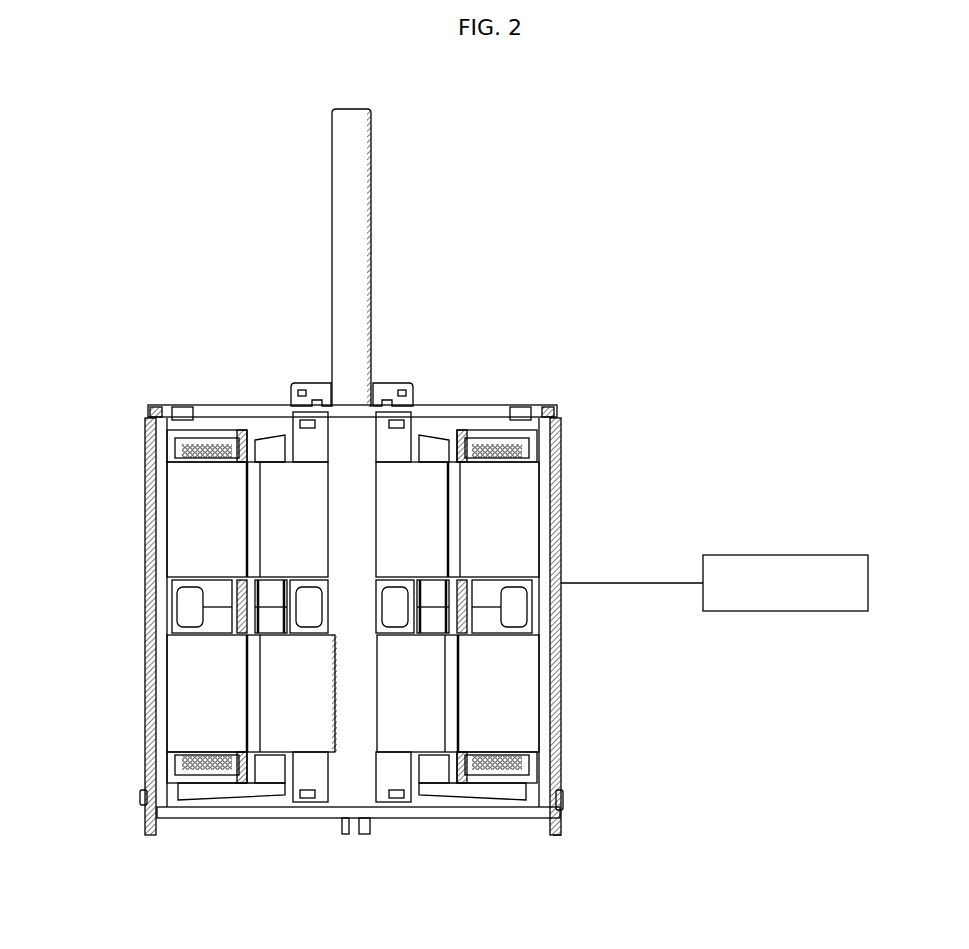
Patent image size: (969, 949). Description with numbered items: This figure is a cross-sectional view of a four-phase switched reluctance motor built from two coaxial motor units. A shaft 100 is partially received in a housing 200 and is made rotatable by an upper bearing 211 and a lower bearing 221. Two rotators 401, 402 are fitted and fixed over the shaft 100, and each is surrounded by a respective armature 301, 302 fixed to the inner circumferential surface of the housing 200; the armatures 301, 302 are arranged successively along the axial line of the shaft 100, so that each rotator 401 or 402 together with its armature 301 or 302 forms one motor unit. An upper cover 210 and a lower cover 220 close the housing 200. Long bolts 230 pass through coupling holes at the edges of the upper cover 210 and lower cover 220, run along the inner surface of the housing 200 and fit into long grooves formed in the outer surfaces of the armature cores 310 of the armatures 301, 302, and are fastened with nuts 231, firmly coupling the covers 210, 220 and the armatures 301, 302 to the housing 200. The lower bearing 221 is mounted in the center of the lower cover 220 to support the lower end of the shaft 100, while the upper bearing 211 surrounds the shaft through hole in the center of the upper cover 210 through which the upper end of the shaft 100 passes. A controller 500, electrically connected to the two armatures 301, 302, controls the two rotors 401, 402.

The shaft 100 is at (362, 182).
The housing 200 is at (421, 611).
The upper cover 210 is at (477, 408).
The bearing 211 is at (420, 407).
The lower cover 220 is at (468, 805).
The bearing 221 is at (413, 790).
The long bolts 230 is at (555, 440).
The nuts 231 is at (558, 822).
The armature 301 is at (150, 497).
The armature 302 is at (150, 666).
The armature core 310 is at (183, 518).
The rotator 401 is at (240, 545).
The rotator 402 is at (228, 722).
The controller 500 is at (785, 555).